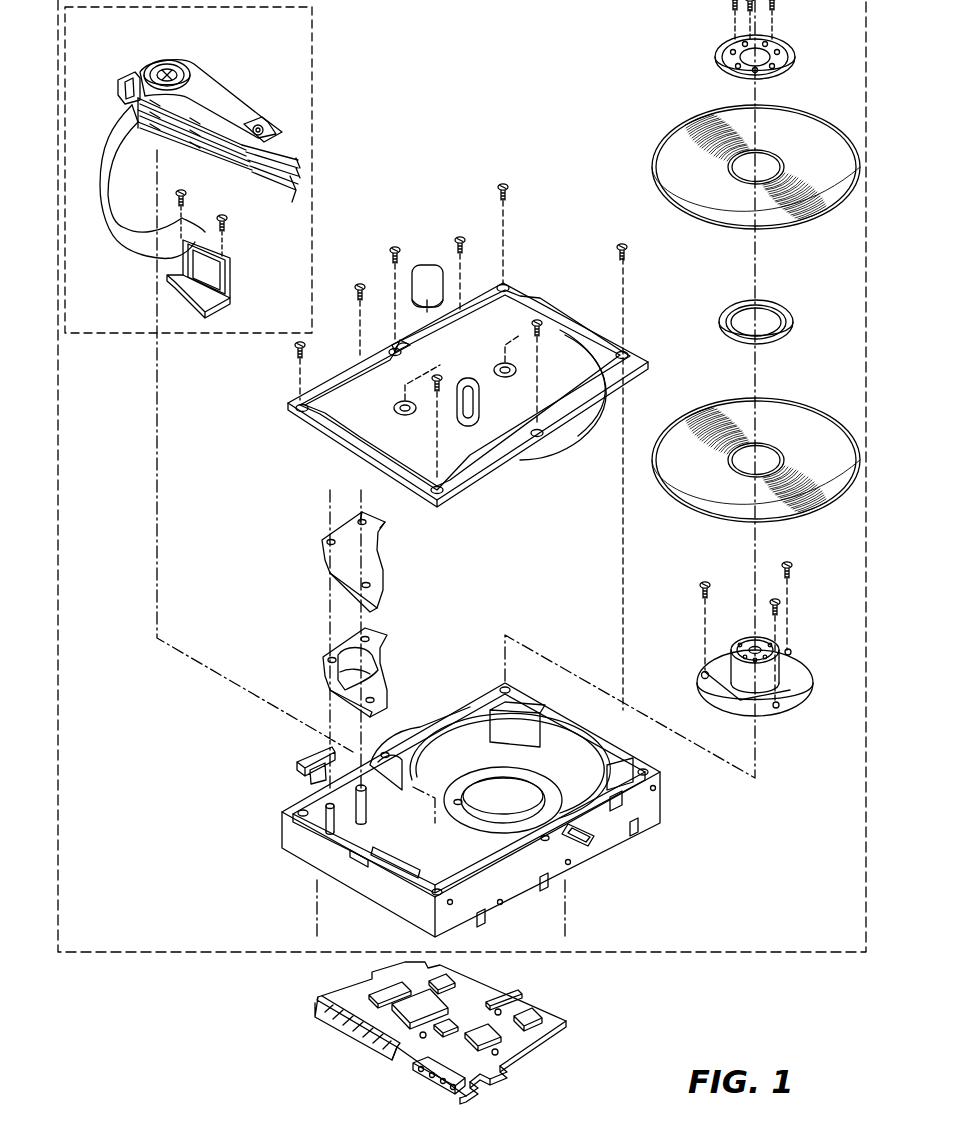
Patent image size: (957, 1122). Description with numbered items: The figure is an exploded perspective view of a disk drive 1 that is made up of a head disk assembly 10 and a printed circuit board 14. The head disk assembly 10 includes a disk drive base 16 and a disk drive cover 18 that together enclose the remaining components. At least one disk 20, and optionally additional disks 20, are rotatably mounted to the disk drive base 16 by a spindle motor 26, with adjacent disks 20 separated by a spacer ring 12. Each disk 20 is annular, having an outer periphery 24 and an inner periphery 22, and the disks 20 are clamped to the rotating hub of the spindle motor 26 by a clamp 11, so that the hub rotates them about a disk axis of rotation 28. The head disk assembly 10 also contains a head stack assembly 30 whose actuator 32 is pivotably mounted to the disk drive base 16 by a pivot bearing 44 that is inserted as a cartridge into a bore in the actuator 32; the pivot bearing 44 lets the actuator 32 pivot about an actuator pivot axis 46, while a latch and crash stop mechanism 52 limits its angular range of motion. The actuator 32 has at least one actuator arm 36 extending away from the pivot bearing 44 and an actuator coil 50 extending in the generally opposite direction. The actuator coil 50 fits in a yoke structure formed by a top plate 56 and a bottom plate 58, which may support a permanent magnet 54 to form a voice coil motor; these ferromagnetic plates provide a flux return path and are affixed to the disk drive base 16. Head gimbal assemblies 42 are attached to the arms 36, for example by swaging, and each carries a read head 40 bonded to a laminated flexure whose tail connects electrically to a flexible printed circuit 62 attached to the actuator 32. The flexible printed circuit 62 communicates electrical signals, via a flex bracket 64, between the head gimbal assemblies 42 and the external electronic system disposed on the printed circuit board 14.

The disk drive 1 is at (750, 990).
The head disk assembly 10 is at (661, 953).
The clamp 11 is at (785, 40).
The spacer ring 12 is at (720, 322).
The printed circuit board 14 is at (538, 1040).
The disk drive base 16 is at (602, 848).
The disk drive cover 18 is at (510, 288).
The disk 20 is at (812, 126).
The inner periphery 22 is at (780, 152).
The outer periphery 24 is at (698, 224).
The spindle motor 26 is at (796, 708).
The disk axis of rotation 28 is at (758, 258).
The head stack assembly 30 is at (103, 341).
The actuator 32 is at (166, 60).
The actuator arm 36 is at (212, 92).
The read head 40 is at (294, 186).
The head gimbal assembly 42 is at (276, 138).
The pivot bearing 44 is at (185, 61).
The actuator pivot axis 46 is at (156, 525).
The actuator coil 50 is at (135, 78).
The latch and crash stop mechanism 52 is at (296, 772).
The permanent magnet 54 is at (330, 676).
The top plate 56 is at (332, 556).
The bottom plate 58 is at (386, 680).
The flexible printed circuit 62 is at (127, 242).
The flex bracket 64 is at (238, 300).